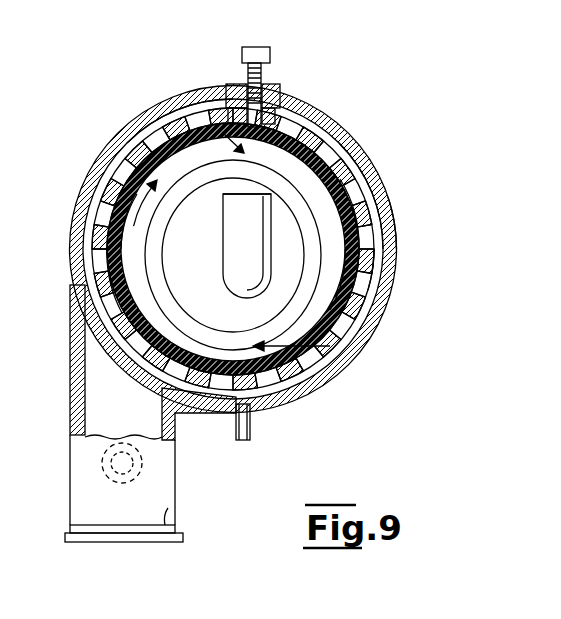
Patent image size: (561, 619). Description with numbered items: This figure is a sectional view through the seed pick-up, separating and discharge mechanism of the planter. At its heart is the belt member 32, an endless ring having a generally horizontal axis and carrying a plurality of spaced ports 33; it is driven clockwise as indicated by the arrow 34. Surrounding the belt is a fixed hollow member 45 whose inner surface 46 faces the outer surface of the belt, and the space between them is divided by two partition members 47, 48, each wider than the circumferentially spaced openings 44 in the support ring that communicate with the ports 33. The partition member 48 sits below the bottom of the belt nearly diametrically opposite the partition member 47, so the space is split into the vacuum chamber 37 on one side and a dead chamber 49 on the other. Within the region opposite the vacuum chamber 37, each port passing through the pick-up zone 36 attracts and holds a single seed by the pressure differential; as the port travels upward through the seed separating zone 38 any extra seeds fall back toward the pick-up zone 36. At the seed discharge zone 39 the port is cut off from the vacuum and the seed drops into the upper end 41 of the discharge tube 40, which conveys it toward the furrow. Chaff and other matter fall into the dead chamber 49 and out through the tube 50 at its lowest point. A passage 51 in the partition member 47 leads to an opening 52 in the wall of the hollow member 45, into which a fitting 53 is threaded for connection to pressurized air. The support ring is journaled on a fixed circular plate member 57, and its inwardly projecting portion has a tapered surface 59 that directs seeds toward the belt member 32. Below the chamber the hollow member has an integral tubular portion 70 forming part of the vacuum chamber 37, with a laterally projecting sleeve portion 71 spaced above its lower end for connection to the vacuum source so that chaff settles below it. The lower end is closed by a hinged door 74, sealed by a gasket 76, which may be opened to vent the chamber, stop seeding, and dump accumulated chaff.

The belt member 32 is at (352, 291).
The ports 33 is at (347, 162).
The arrow 34 is at (120, 176).
The pick-up zone 36 is at (305, 349).
The vacuum chamber 37 is at (113, 336).
The seed separating zone 38 is at (143, 251).
The seed discharge zone 39 is at (205, 119).
The discharge tube 40 is at (222, 263).
The upper end 41 is at (225, 191).
The openings 44 is at (302, 136).
The hollow member 45 is at (372, 181).
The inner surface 46 is at (386, 244).
The partition member 47 is at (240, 96).
The partition member 48 is at (223, 403).
The dead chamber 49 is at (364, 278).
The tube 50 is at (253, 425).
The passage 51 is at (279, 100).
The opening 52 is at (263, 100).
The fitting 53 is at (263, 50).
The fixed circular plate member 57 is at (362, 213).
The tapered surface 59 is at (138, 290).
The tubular portion 70 is at (85, 482).
The sleeve portion 71 is at (118, 460).
The hinged door 74 is at (185, 537).
The sealing gasket 76 is at (170, 506).